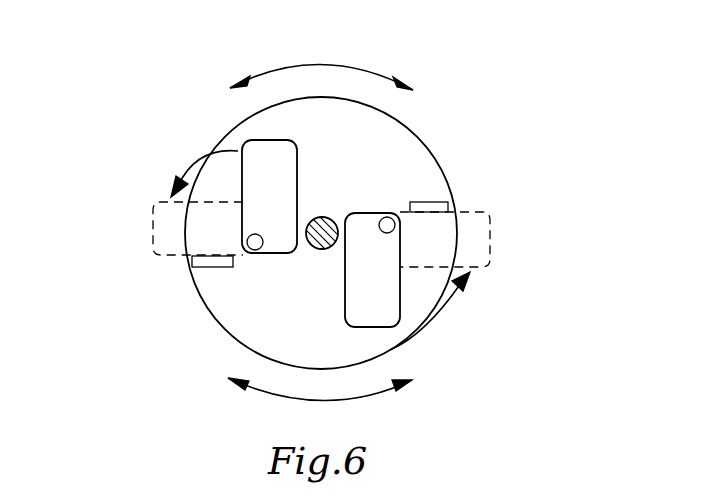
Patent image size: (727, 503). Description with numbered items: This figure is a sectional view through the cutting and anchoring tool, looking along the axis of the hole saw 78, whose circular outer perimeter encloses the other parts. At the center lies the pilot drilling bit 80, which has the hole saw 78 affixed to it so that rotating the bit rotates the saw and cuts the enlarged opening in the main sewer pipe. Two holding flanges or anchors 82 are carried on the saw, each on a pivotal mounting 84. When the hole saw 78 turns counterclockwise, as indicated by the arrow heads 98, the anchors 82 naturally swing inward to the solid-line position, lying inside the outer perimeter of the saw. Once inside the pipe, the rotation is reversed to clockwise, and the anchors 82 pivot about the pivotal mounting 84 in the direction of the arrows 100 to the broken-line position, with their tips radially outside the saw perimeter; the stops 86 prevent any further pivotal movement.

The hole saw 78 is at (423, 143).
The pilot drilling bit 80 is at (319, 250).
The holding flanges or anchors 82 is at (153, 212).
The pivotal mounting 84 is at (254, 250).
The stops 86 is at (205, 268).
The arrow heads 98 is at (255, 80).
The arrows 100 is at (190, 165).